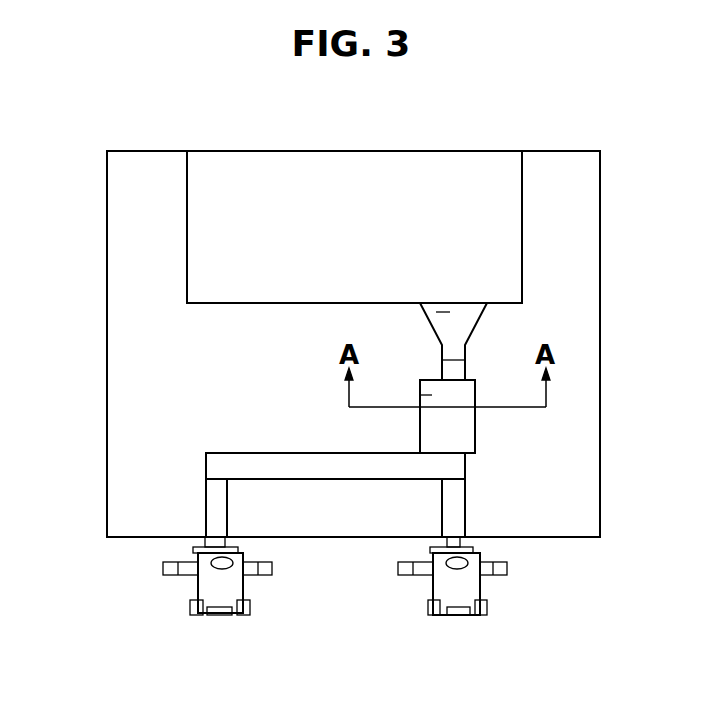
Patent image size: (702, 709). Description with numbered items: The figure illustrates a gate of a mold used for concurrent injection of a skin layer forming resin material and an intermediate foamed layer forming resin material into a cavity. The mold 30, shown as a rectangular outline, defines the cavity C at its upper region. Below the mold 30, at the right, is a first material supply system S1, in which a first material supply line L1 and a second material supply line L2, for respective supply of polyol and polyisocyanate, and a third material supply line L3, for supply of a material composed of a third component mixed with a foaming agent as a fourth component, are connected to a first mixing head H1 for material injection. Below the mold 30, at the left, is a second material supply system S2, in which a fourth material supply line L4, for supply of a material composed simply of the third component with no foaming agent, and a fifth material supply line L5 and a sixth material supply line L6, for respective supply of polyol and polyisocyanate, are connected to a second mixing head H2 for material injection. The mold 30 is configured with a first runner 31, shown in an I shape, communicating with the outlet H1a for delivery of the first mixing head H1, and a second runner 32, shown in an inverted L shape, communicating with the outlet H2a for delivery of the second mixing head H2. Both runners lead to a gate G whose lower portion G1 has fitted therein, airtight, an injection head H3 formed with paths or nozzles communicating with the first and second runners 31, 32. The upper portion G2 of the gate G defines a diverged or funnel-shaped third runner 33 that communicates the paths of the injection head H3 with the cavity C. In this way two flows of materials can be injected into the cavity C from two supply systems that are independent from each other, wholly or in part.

The mold 30 is at (105, 294).
The cavity C is at (349, 160).
The third runner 33 is at (471, 323).
The upper portion of the gate G2 is at (432, 318).
The gate G is at (465, 365).
The lower portion of the gate G1 is at (422, 397).
The injection head H3 is at (475, 425).
The first runner 31 is at (465, 493).
The second runner 32 is at (206, 470).
The outlet of the second mixing head H2a is at (206, 540).
The outlet of the first mixing head H1a is at (441, 542).
The second material supply system S2 is at (212, 619).
The first material supply system S1 is at (465, 616).
The first material supply line L1 is at (408, 578).
The second material supply line L2 is at (500, 578).
The third material supply line L3 is at (482, 588).
The fourth material supply line L4 is at (200, 584).
The fifth material supply line L5 is at (272, 572).
The sixth material supply line L6 is at (163, 570).
The first mixing head H1 is at (430, 592).
The second mixing head H2 is at (243, 592).